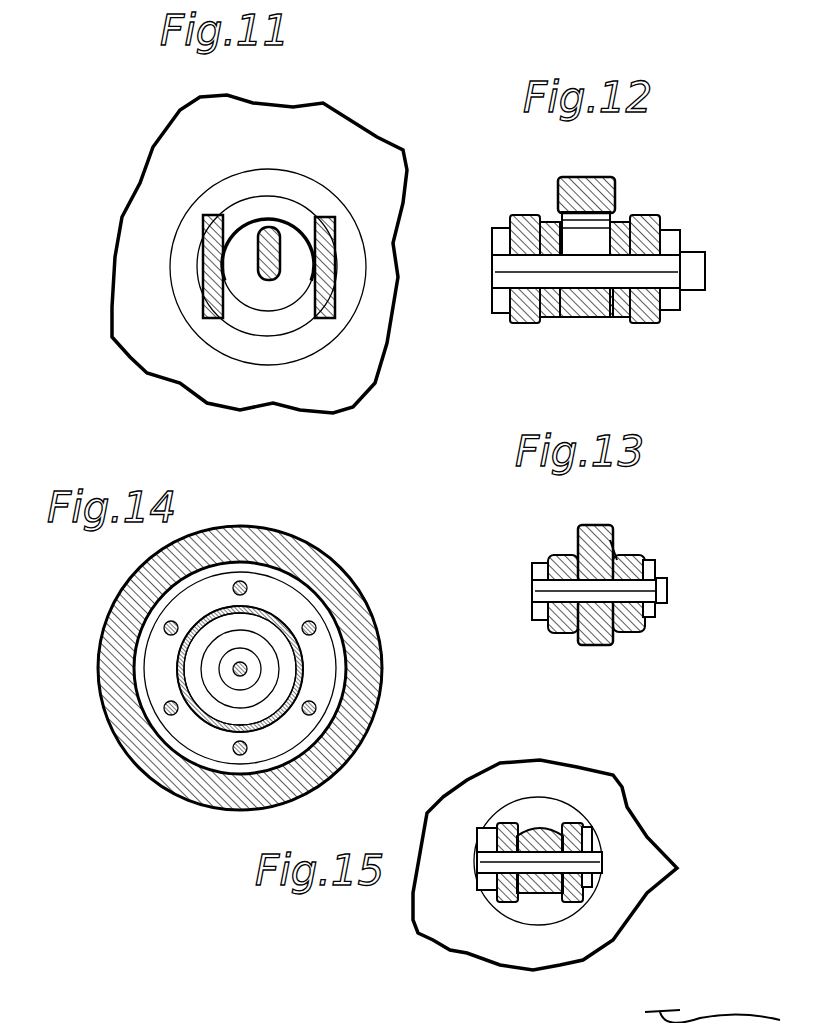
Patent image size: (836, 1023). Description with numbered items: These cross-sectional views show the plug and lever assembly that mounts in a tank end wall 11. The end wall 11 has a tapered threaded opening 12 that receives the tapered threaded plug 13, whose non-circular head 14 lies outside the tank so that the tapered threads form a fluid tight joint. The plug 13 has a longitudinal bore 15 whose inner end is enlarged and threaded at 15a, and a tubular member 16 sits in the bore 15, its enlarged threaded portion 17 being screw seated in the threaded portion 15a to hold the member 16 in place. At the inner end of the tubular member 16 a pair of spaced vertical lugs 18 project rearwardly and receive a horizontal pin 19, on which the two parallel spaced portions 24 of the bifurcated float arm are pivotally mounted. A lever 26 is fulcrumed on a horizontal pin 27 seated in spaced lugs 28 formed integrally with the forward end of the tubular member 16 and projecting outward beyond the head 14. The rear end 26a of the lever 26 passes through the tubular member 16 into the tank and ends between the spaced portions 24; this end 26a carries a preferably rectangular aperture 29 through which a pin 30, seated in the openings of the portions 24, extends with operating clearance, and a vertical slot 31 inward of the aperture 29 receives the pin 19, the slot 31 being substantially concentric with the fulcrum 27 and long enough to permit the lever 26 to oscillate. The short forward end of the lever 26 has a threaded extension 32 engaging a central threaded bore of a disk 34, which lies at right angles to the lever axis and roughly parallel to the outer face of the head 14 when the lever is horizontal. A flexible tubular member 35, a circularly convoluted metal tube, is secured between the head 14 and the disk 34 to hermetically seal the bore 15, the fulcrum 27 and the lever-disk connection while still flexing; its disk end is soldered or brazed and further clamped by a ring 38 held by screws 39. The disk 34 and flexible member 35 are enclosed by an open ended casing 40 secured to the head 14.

In FIG. 11, the end wall 11 is at (128, 250).
In FIG. 11, the threaded opening 12 is at (337, 197).
In FIG. 11, the threaded plug 13 is at (237, 239).
In FIG. 11, the threaded portion of bore 15a is at (247, 193).
In FIG. 11, the tubular member 16 is at (266, 259).
In FIG. 15, the tubular member 16 is at (563, 910).
In FIG. 11, the enlarged threaded portion 17 is at (283, 207).
In FIG. 11, the lugs 18 is at (325, 257).
In FIG. 12, the lugs 18 is at (523, 323).
In FIG. 11, the rear end of lever 26a is at (270, 281).
In FIG. 12, the rear end of lever 26a is at (570, 193).
In FIG. 13, the rear end of lever 26a is at (583, 538).
In FIG. 12, the pin 19 is at (575, 317).
In FIG. 12, the spaced portions 24 is at (552, 320).
In FIG. 13, the spaced portions 24 is at (555, 627).
In FIG. 12, the slot 31 is at (600, 223).
In FIG. 13, the aperture 29 is at (617, 545).
In FIG. 13, the pin 30 is at (588, 640).
In FIG. 14, the threaded extension 32 is at (240, 677).
In FIG. 14, the disk 34 is at (163, 723).
In FIG. 14, the flexible tubular member 35 is at (303, 680).
In FIG. 14, the ring 38 is at (157, 660).
In FIG. 14, the screws 39 is at (308, 622).
In FIG. 14, the casing 40 is at (352, 603).
In FIG. 15, the non-circular head 14 is at (450, 933).
In FIG. 15, the longitudinal bore 15 is at (570, 841).
In FIG. 15, the lever 26 is at (552, 830).
In FIG. 15, the pin 27 is at (537, 895).
In FIG. 15, the lugs 28 is at (477, 827).